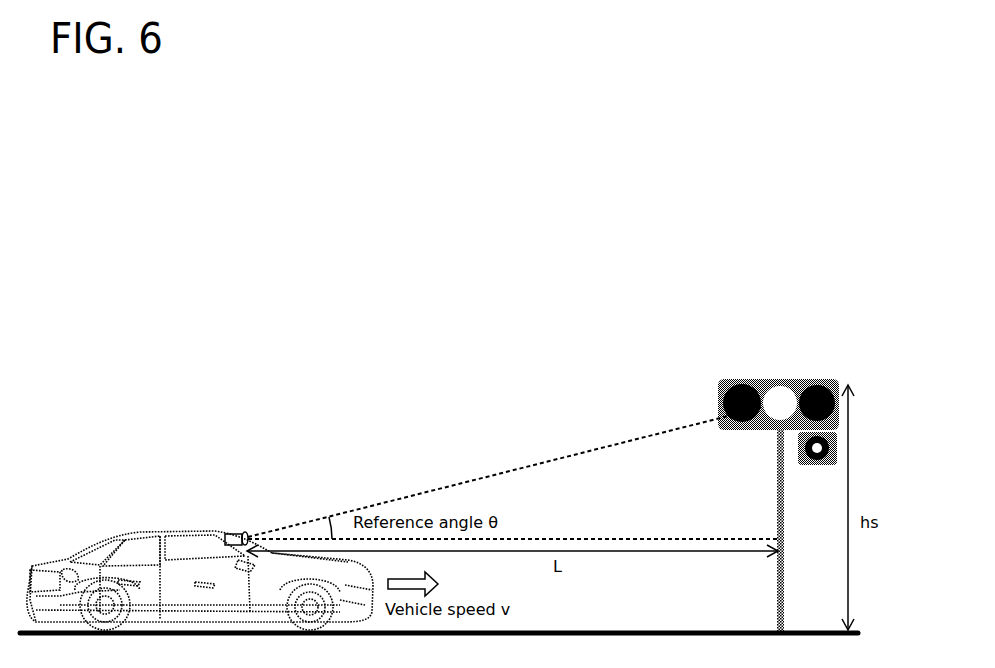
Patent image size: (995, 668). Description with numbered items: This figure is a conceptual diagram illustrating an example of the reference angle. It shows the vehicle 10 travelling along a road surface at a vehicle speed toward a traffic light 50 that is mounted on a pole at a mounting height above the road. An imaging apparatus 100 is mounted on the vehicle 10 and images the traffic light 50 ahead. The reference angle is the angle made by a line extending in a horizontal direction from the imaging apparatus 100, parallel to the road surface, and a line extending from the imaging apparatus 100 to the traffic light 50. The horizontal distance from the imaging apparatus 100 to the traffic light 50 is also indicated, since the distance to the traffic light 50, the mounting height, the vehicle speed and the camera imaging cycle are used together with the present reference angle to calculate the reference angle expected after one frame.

The vehicle 10 is at (138, 532).
The imaging apparatus 100 is at (226, 535).
The traffic light 50 is at (800, 378).